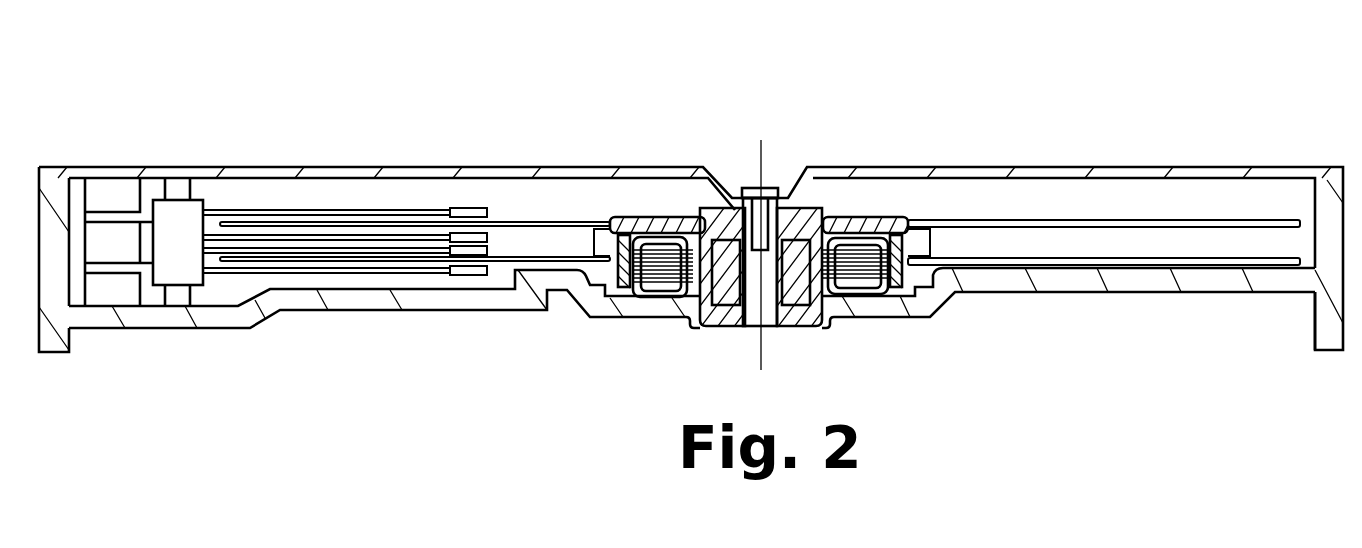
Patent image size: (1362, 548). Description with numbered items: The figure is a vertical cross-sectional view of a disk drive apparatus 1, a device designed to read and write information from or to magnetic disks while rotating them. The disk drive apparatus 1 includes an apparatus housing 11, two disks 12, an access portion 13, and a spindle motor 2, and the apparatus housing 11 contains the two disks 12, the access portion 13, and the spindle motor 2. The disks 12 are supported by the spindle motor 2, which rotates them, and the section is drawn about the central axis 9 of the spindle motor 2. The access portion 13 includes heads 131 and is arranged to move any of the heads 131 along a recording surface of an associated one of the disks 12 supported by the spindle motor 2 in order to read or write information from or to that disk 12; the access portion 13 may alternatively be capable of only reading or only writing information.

The disk drive apparatus 1 is at (247, 75).
The spindle motor 2 is at (880, 213).
The rotation axis 9 is at (758, 157).
The apparatus housing 11 is at (1262, 172).
The disk 12 is at (1118, 225).
The access portion 13 is at (367, 287).
The head 131 is at (472, 213).